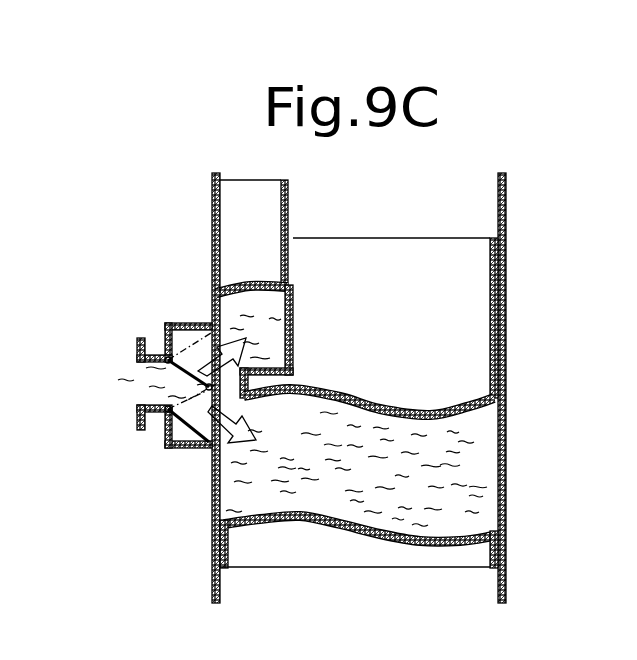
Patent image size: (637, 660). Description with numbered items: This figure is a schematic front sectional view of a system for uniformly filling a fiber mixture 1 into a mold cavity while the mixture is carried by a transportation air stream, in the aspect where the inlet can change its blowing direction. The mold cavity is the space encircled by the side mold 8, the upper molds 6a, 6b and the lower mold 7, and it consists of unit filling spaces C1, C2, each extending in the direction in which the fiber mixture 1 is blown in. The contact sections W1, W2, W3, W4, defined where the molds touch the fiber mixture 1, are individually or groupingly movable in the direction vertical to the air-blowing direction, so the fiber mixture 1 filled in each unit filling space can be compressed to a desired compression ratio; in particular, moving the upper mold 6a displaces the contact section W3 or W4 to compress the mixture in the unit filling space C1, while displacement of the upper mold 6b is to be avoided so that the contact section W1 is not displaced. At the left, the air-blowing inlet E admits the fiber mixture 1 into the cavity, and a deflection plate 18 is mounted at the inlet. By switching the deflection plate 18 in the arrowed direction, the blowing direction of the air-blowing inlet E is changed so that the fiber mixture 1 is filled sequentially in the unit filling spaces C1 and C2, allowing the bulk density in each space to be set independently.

The fiber mixture 1 is at (336, 422).
The upper mold 6a is at (452, 298).
The upper mold 6b is at (252, 222).
The lower mold 7 is at (500, 549).
The side mold 8 is at (210, 515).
The deflection plate 18 is at (178, 378).
The unit filling space C1 is at (272, 325).
The unit filling space C2 is at (465, 460).
The air-blowing inlet E is at (148, 392).
The contact section W1 is at (248, 283).
The contact section W2 is at (255, 353).
The contact section W3 is at (440, 404).
The contact section W4 is at (442, 536).